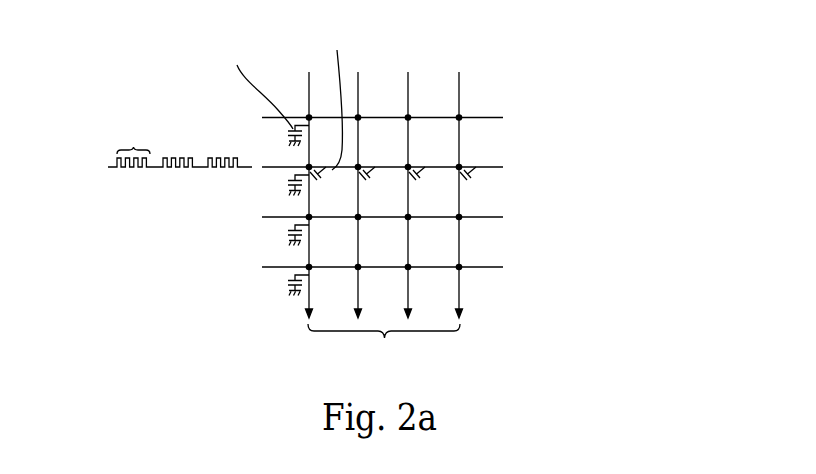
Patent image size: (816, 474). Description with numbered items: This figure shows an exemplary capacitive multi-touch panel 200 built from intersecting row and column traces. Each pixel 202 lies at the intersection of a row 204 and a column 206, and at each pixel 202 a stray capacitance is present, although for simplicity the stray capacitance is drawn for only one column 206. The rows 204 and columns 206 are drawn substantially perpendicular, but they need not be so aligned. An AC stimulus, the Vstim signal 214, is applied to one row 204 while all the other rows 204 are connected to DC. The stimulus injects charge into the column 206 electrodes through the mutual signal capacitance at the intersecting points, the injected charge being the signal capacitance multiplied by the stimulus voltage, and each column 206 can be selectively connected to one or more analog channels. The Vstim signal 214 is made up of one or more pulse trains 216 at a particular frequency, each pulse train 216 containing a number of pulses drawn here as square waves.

The capacitive multi-touch panel 200 is at (380, 192).
The pixel 202 is at (460, 116).
The row 204 is at (490, 119).
The column 206 is at (459, 202).
The Vstim signal 214 is at (147, 174).
The pulse train 216 is at (136, 106).